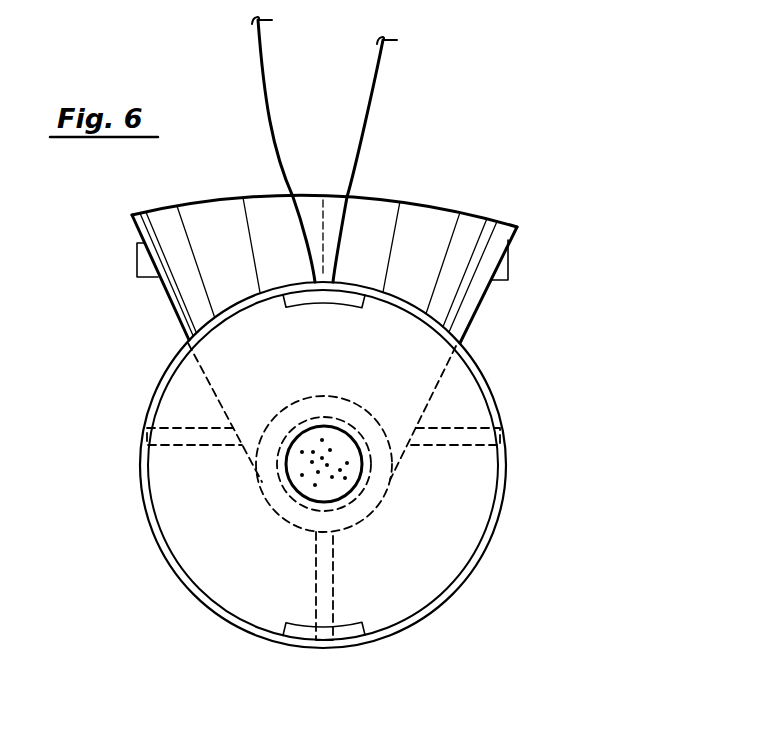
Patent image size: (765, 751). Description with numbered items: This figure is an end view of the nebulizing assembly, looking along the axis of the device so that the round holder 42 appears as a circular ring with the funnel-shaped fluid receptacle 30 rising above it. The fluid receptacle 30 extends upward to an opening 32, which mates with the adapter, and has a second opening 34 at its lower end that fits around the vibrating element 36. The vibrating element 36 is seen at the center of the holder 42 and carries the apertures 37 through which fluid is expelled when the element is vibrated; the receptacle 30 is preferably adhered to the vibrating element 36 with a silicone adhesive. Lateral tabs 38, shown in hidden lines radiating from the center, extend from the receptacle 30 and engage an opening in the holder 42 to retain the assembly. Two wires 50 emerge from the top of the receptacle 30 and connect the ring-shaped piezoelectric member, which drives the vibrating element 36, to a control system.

The fluid receptacle 30 is at (473, 243).
The opening 32 is at (398, 200).
The second opening 34 is at (362, 505).
The vibrating element 36 is at (308, 478).
The apertures 37 is at (371, 455).
The lateral tabs 38 is at (467, 428).
The holder 42 is at (490, 535).
The wires 50 is at (373, 107).